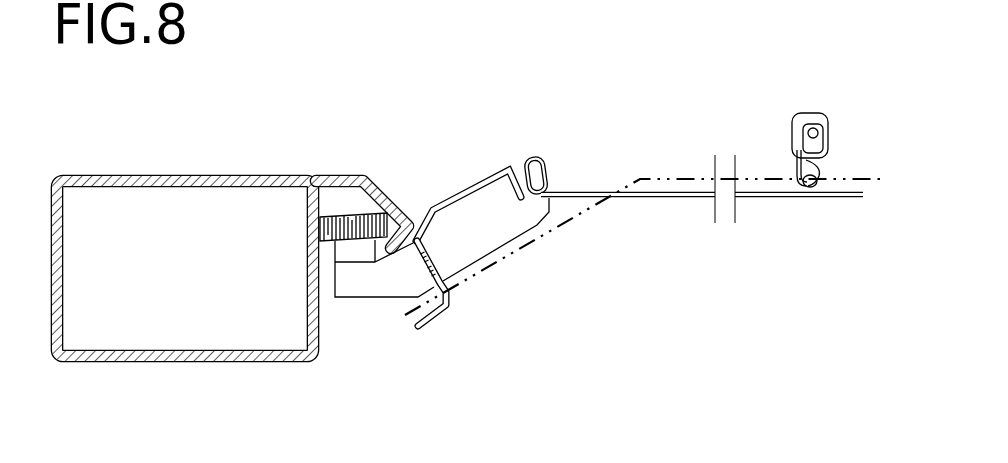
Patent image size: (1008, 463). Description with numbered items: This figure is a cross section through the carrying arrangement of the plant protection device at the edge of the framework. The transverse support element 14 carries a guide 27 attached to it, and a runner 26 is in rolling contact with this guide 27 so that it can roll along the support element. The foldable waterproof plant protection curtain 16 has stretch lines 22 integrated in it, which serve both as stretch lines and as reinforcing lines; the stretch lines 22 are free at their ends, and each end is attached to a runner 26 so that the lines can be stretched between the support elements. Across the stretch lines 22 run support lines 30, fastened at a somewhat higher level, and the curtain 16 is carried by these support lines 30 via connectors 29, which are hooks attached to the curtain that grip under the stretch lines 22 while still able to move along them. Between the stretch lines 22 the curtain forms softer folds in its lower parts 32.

The transverse support element 14 is at (143, 161).
The plant protection curtain 16 is at (576, 219).
The stretch lines 22 is at (430, 321).
The runner 26 is at (495, 235).
The guide 27 is at (378, 186).
The connectors 29 is at (803, 123).
The support lines 30 is at (827, 120).
The lower parts 32 is at (578, 0).